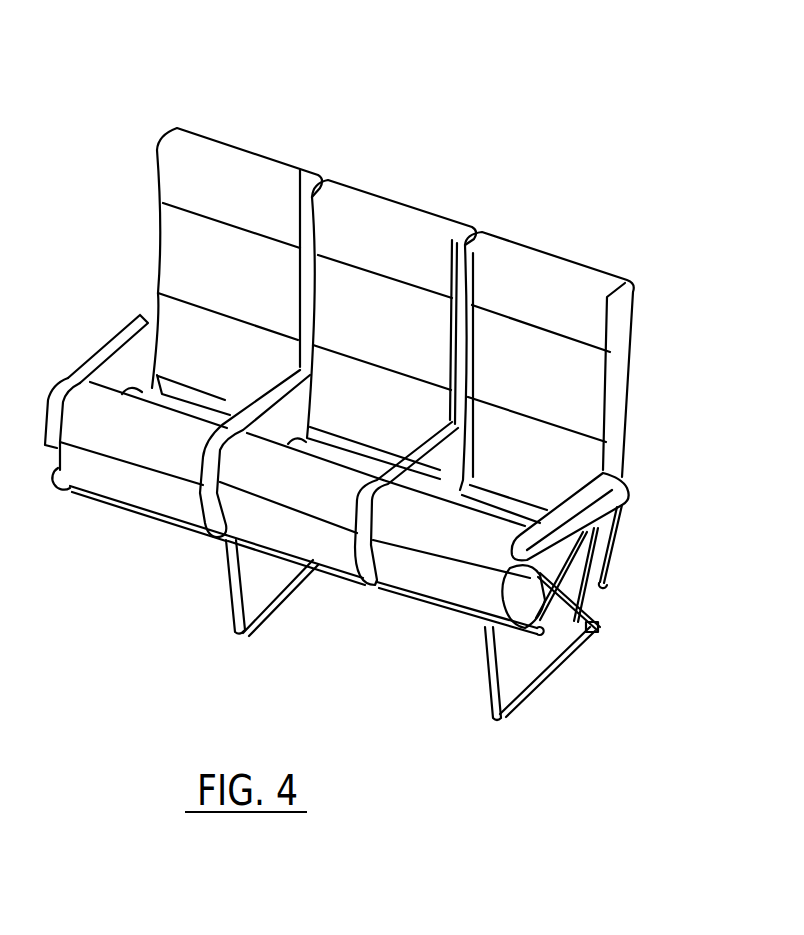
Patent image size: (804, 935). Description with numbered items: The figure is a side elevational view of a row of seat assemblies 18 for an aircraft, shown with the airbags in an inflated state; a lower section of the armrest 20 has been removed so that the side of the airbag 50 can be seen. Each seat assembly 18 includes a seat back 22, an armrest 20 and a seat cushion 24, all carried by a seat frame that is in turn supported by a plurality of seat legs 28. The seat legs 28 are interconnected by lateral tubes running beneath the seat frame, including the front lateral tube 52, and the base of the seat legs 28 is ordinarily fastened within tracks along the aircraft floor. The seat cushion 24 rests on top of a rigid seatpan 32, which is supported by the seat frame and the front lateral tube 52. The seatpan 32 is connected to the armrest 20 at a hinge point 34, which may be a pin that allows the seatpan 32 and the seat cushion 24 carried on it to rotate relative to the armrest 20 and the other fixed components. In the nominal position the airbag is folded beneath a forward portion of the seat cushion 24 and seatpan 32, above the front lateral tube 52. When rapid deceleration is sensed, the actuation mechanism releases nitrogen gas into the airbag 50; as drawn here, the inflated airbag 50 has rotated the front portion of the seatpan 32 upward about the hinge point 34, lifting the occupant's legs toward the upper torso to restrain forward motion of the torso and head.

The seat assembly 18 is at (494, 97).
The armrest 20 is at (607, 502).
The seat back 22 is at (625, 407).
The seat cushion 24 is at (467, 545).
The seat legs 28 is at (583, 630).
The seatpan 32 is at (587, 620).
The hinge point 34 is at (613, 567).
The airbag 50 is at (490, 600).
The front lateral tube 52 is at (518, 705).